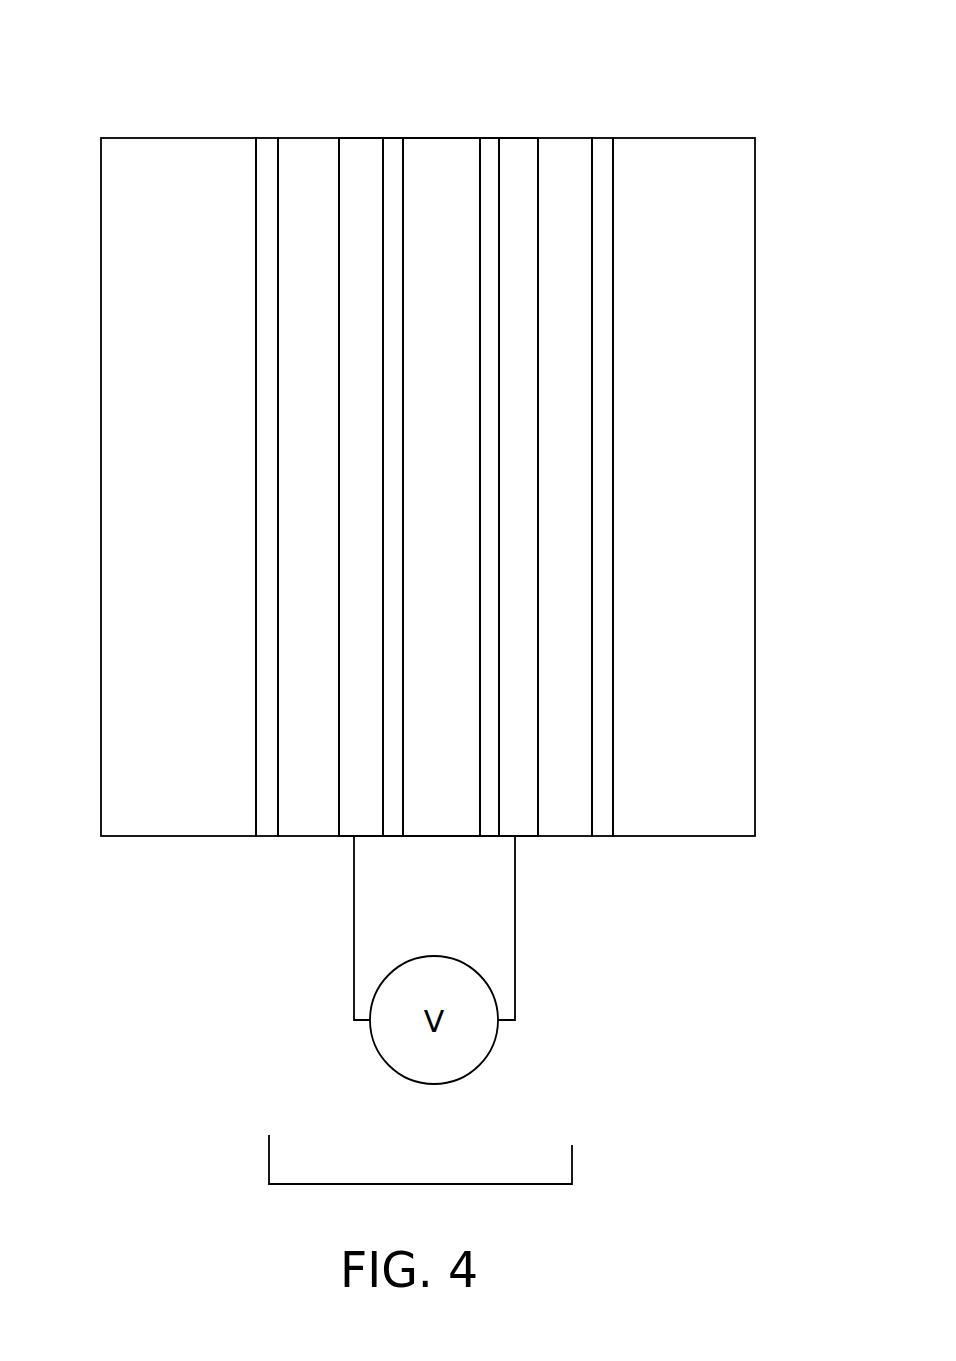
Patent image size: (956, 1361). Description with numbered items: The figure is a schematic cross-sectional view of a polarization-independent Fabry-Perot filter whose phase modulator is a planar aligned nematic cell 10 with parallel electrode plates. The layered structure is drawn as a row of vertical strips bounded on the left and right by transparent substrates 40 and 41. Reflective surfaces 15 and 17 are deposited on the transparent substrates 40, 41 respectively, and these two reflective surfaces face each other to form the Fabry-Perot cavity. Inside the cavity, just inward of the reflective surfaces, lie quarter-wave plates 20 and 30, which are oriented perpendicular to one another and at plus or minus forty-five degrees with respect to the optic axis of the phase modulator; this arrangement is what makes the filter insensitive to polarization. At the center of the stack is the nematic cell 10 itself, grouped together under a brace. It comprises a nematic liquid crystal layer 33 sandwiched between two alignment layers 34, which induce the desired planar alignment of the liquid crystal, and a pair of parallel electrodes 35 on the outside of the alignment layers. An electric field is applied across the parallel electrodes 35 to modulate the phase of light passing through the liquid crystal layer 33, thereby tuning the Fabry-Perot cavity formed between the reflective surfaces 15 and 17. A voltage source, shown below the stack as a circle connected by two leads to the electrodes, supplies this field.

The planar aligned nematic cell 10 is at (550, 58).
The transparent substrate 40 is at (140, 837).
The reflective surface 15 is at (268, 837).
The quarter-wave plate 20 is at (300, 837).
The parallel electrodes 35 is at (357, 138).
The alignment layers 34 is at (386, 138).
The nematic liquid crystal layer 33 is at (436, 138).
The quarter-wave plate 30 is at (557, 837).
The reflective surface 17 is at (599, 837).
The transparent substrate 41 is at (688, 837).